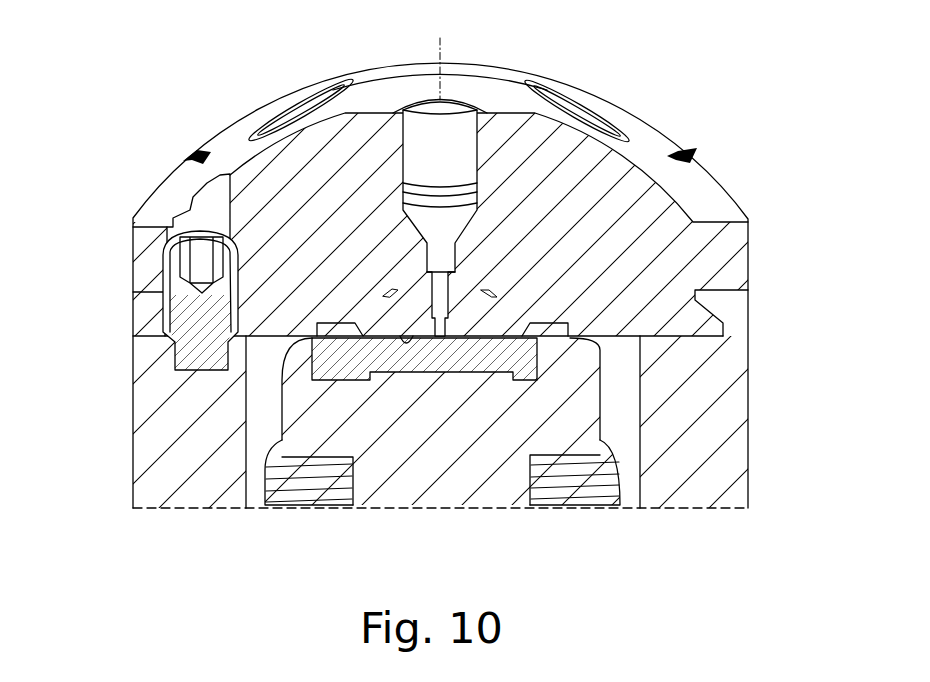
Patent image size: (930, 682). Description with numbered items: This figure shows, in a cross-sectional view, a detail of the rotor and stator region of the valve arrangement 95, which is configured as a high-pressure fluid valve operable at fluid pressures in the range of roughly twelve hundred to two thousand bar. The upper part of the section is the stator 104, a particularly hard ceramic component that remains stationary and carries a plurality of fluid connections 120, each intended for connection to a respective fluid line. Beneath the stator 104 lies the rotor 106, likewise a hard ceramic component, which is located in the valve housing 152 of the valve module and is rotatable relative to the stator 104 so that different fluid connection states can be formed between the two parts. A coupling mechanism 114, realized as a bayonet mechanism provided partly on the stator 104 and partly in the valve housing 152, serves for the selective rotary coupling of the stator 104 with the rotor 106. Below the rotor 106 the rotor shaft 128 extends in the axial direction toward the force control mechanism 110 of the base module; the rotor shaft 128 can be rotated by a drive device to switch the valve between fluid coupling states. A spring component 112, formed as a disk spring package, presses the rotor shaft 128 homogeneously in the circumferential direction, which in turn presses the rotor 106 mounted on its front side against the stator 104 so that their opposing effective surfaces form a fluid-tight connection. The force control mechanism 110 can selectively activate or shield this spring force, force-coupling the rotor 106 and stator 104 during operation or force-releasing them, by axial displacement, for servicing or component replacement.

The valve arrangement 95 is at (680, 62).
The stator 104 is at (160, 188).
The rotor 106 is at (318, 356).
The force control mechanism 110 is at (572, 530).
The spring component 112 is at (310, 490).
The coupling mechanism 114 is at (725, 306).
The fluid connections 120 is at (307, 96).
The rotor shaft 128 is at (475, 488).
The valve housing 152 is at (153, 435).